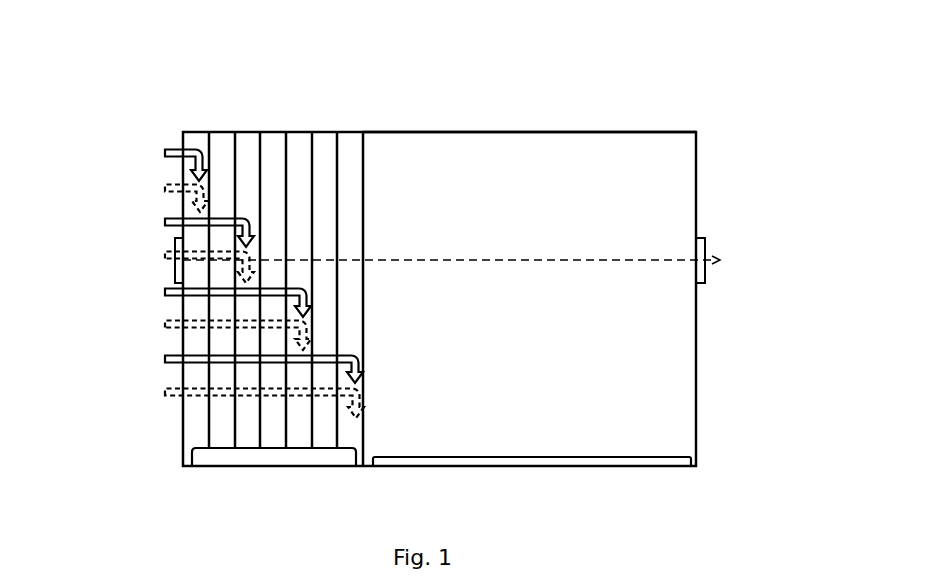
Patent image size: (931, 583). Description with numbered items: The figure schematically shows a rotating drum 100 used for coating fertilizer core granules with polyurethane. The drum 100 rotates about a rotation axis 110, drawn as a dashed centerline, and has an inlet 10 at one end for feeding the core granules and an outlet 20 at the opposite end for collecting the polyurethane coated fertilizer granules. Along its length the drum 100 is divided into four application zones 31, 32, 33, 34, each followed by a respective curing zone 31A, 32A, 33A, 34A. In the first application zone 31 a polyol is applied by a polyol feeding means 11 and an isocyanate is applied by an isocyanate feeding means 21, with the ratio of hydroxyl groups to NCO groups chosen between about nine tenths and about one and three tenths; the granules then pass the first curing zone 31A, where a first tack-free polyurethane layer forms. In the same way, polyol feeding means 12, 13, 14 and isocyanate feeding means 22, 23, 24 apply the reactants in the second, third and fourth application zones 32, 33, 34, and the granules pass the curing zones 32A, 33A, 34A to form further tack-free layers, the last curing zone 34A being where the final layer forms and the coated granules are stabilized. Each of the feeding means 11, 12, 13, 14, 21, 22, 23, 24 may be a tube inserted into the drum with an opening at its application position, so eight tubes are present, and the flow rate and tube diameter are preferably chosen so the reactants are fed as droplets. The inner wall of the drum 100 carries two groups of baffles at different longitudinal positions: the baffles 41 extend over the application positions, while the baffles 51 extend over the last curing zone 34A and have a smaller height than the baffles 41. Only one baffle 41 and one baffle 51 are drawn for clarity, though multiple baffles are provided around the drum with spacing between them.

The rotating drum 100 is at (737, 95).
The inlet 10 is at (175, 243).
The outlet 20 is at (722, 260).
The polyol feeding means 11 is at (165, 153).
The polyol feeding means 12 is at (165, 222).
The polyol feeding means 13 is at (165, 292).
The polyol feeding means 14 is at (165, 359).
The isocyanate feeding means 21 is at (165, 188).
The isocyanate feeding means 22 is at (165, 255).
The isocyanate feeding means 23 is at (165, 324).
The isocyanate feeding means 24 is at (165, 392).
The first application zone 31 is at (193, 147).
The first curing zone 31A is at (217, 155).
The second application zone 32 is at (243, 142).
The second curing zone 32A is at (275, 150).
The third application zone 33 is at (295, 140).
The third curing zone 33A is at (332, 152).
The fourth application zone 34 is at (347, 140).
The last curing zone 34A is at (387, 152).
The baffle 41 is at (338, 458).
The baffle 51 is at (567, 460).
The rotation axis 110 is at (653, 263).